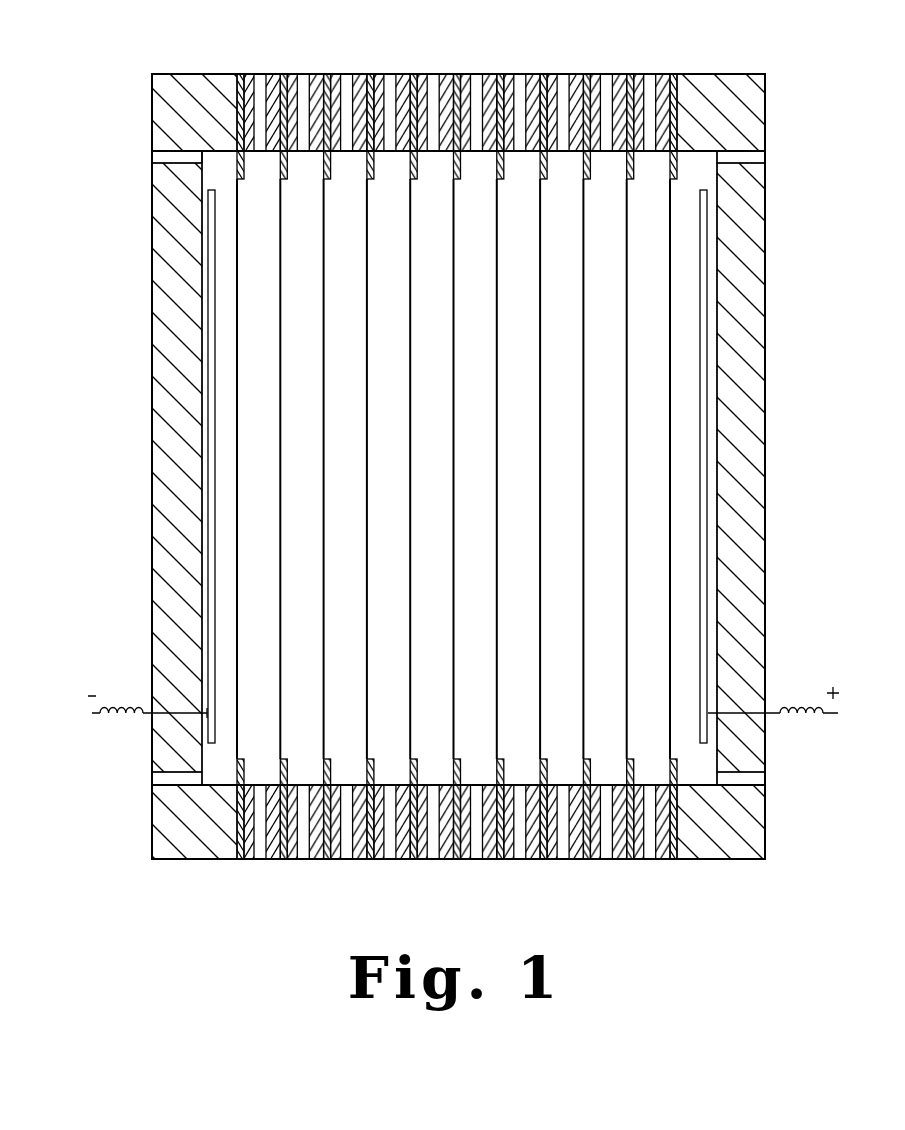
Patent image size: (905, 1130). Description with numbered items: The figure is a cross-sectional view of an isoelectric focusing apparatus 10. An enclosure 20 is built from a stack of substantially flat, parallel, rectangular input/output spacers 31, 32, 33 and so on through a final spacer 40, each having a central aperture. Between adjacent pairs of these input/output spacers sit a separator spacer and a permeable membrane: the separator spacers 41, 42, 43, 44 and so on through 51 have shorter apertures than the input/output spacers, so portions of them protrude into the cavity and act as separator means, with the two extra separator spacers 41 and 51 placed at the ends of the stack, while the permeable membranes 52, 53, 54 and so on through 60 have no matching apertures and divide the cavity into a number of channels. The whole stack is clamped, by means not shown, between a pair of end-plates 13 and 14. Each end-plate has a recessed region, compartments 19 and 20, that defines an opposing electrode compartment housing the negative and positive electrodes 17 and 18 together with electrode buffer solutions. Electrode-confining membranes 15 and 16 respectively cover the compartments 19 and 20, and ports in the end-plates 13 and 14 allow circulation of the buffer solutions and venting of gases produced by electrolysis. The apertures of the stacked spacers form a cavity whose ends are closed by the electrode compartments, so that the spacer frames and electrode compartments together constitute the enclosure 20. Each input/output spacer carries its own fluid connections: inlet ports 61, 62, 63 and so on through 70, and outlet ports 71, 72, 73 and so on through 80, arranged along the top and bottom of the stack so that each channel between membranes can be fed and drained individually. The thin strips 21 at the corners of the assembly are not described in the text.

The apparatus 10 is at (141, 937).
The end-plate 13 is at (152, 98).
The end-plate 14 is at (765, 255).
The electrode-confining membrane 15 is at (236, 530).
The electrode-confining membrane 16 is at (672, 572).
The negative electrode 17 is at (211, 435).
The positive electrode 18 is at (710, 502).
The electrode compartment 19 is at (227, 340).
The enclosure 20 is at (150, 850).
The gasket 21 is at (152, 157).
The input/output spacer 31 is at (243, 70).
The input/output spacer 32 is at (291, 70).
The input/output spacer 33 is at (334, 70).
The input/output spacer 40 is at (670, 70).
The separator spacer 41 is at (246, 166).
The separator spacer 42 is at (289, 167).
The separator spacer 43 is at (332, 167).
The separator spacer 44 is at (376, 169).
The separator spacer 51 is at (680, 181).
The permeable membrane 52 is at (279, 318).
The permeable membrane 53 is at (324, 325).
The permeable membrane 54 is at (368, 338).
The permeable membrane 60 is at (627, 352).
The inlet port 61 is at (259, 72).
The inlet port 62 is at (303, 72).
The inlet port 63 is at (350, 72).
The inlet port 70 is at (655, 72).
The outlet port 71 is at (265, 862).
The outlet port 72 is at (310, 862).
The outlet port 73 is at (358, 862).
The outlet port 80 is at (651, 862).